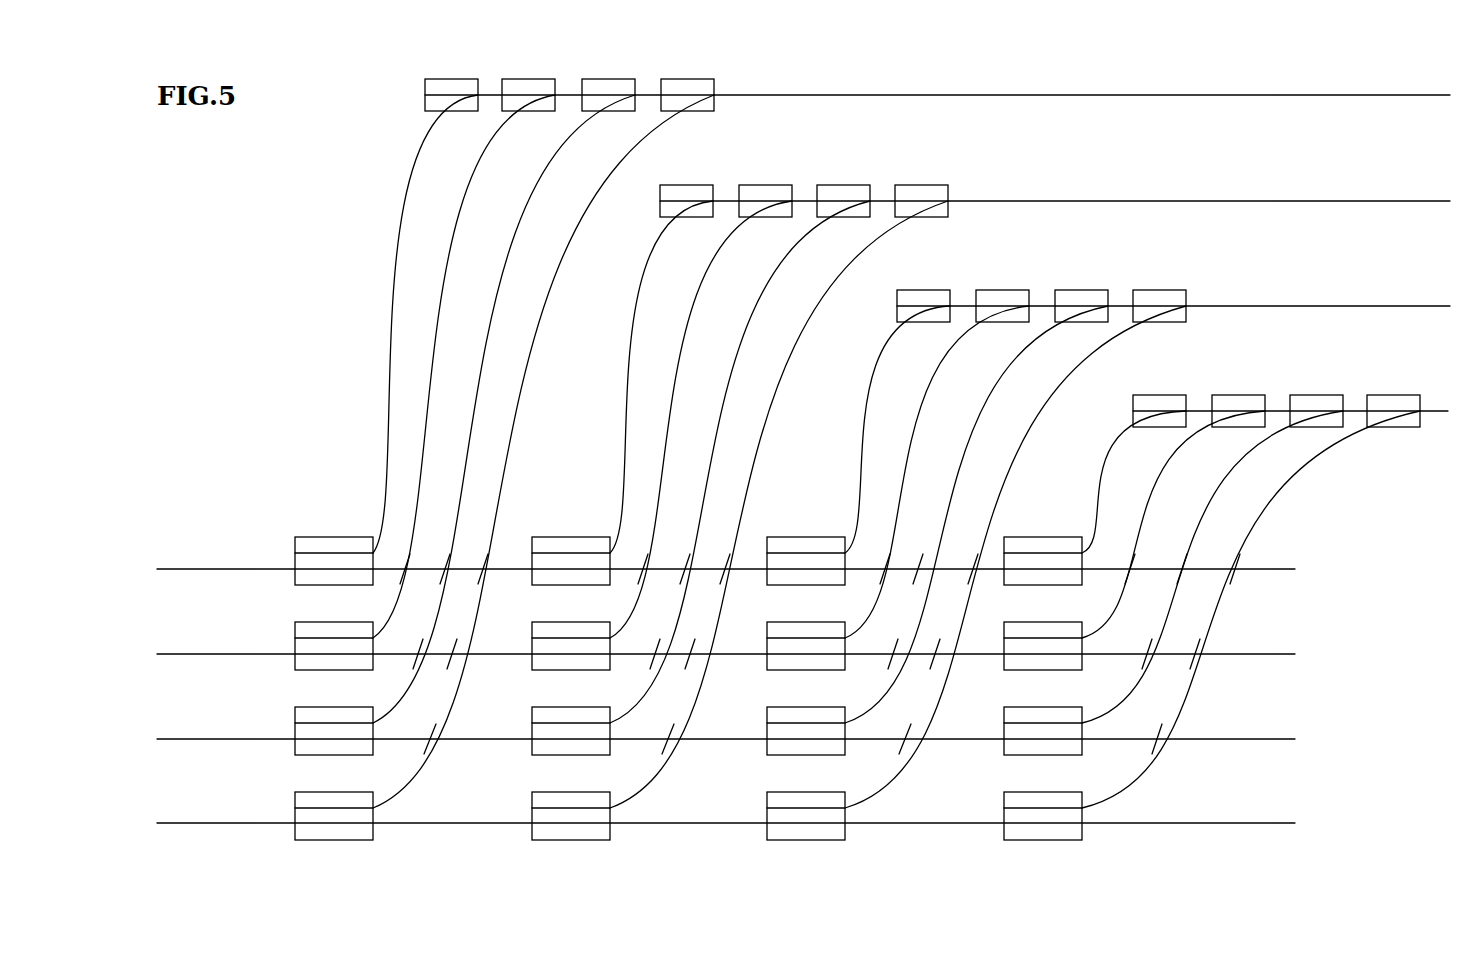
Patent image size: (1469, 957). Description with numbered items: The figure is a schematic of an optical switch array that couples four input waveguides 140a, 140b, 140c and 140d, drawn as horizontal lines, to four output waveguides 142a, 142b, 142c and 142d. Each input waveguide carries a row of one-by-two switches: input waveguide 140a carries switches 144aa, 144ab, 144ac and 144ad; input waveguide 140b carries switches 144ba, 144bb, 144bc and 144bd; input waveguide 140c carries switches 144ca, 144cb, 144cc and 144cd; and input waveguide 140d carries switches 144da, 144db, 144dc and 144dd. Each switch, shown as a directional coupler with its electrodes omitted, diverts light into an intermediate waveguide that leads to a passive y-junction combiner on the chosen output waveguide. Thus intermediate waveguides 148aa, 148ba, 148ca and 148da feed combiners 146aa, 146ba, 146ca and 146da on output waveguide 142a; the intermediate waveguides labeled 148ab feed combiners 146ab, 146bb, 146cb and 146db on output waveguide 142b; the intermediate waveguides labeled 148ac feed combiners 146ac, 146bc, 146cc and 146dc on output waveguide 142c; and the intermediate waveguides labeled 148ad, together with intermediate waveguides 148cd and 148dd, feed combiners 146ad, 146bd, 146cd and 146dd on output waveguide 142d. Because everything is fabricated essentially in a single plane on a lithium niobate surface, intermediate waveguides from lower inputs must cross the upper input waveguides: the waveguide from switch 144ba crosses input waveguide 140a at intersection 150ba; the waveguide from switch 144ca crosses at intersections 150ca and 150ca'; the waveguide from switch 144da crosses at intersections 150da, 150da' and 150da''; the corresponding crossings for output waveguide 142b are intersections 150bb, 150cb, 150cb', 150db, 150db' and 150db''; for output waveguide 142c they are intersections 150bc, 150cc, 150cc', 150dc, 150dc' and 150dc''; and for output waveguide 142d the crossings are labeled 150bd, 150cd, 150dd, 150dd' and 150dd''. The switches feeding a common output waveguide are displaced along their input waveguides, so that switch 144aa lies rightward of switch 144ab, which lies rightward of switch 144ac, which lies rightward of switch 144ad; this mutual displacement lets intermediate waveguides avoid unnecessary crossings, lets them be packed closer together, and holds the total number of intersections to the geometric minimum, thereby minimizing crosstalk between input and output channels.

The input waveguide 140a is at (186, 566).
The input waveguide 140b is at (186, 651).
The input waveguide 140c is at (186, 736).
The input waveguide 140d is at (186, 820).
The output waveguide 142a is at (1065, 94).
The output waveguide 142b is at (1215, 200).
The output waveguide 142c is at (1303, 305).
The output waveguide 142d is at (1435, 417).
The 1×2 switch 144aa is at (300, 537).
The 1×2 switch 144ba is at (300, 622).
The 1×2 switch 144ca is at (300, 707).
The 1×2 switch 144da is at (300, 792).
The 1×2 switch 144ab is at (575, 537).
The 1×2 switch 144bb is at (575, 622).
The 1×2 switch 144cb is at (575, 707).
The 1×2 switch 144db is at (575, 792).
The 1×2 switch 144ac is at (830, 537).
The 1×2 switch 144bc is at (830, 622).
The 1×2 switch 144cc is at (830, 707).
The 1×2 switch 144dc is at (830, 792).
The 1×2 switch 144ad is at (1068, 537).
The 1×2 switch 144bd is at (1068, 622).
The 1×2 switch 144cd is at (1068, 707).
The 1×2 switch 144dd is at (1068, 792).
The passive y-junction combiner 146aa is at (453, 79).
The passive y-junction combiner 146ba is at (531, 79).
The passive y-junction combiner 146ca is at (610, 79).
The passive y-junction combiner 146da is at (689, 79).
The passive y-junction combiner 146ab is at (689, 185).
The passive y-junction combiner 146bb is at (767, 185).
The passive y-junction combiner 146cb is at (845, 185).
The passive y-junction combiner 146db is at (923, 185).
The passive y-junction combiner 146ac is at (926, 290).
The passive y-junction combiner 146bc is at (1005, 290).
The passive y-junction combiner 146cc is at (1083, 290).
The passive y-junction combiner 146dc is at (1161, 290).
The passive y-junction combiner 146ad is at (1162, 395).
The passive y-junction combiner 146bd is at (1241, 395).
The passive y-junction combiner 146cd is at (1319, 395).
The passive y-junction combiner 146dd is at (1396, 395).
The intermediate waveguide 148aa is at (398, 245).
The intermediate waveguide 148ba is at (442, 300).
The intermediate waveguide 148ca is at (477, 350).
The intermediate waveguide 148da is at (519, 407).
The intermediate waveguide 148ab is at (641, 281).
The intermediate waveguide 148ac is at (898, 345).
The intermediate waveguide 148ad is at (1130, 440).
The intermediate waveguide 148cd is at (1210, 500).
The intermediate waveguide 148dd is at (1250, 534).
The intersection 150ba is at (400, 568).
The intersection 150ca is at (435, 527).
The intersection 150da is at (474, 527).
The intersection 150ca' is at (413, 622).
The intersection 150da' is at (452, 622).
The intersection 150da'' is at (460, 707).
The intersection 150bb is at (640, 568).
The intersection 150cb is at (676, 527).
The intersection 150db is at (716, 527).
The intersection 150cb' is at (652, 622).
The intersection 150db' is at (690, 622).
The intersection 150db'' is at (697, 707).
The intersection 150bc is at (885, 568).
The intersection 150cc is at (915, 527).
The intersection 150dc is at (964, 527).
The intersection 150cc' is at (1021, 652).
The intersection 150dc' is at (935, 622).
The intersection 150dc'' is at (937, 707).
The crossover of connecting line and row line 150bd is at (1130, 570).
The crossover of connecting line and row line 150cd is at (1183, 570).
The crossover of connecting line and row line 150dd is at (1247, 600).
The crossover of connecting line and row line 150dd' is at (1208, 680).
The crossover of connecting line and row line 150dd'' is at (1184, 775).